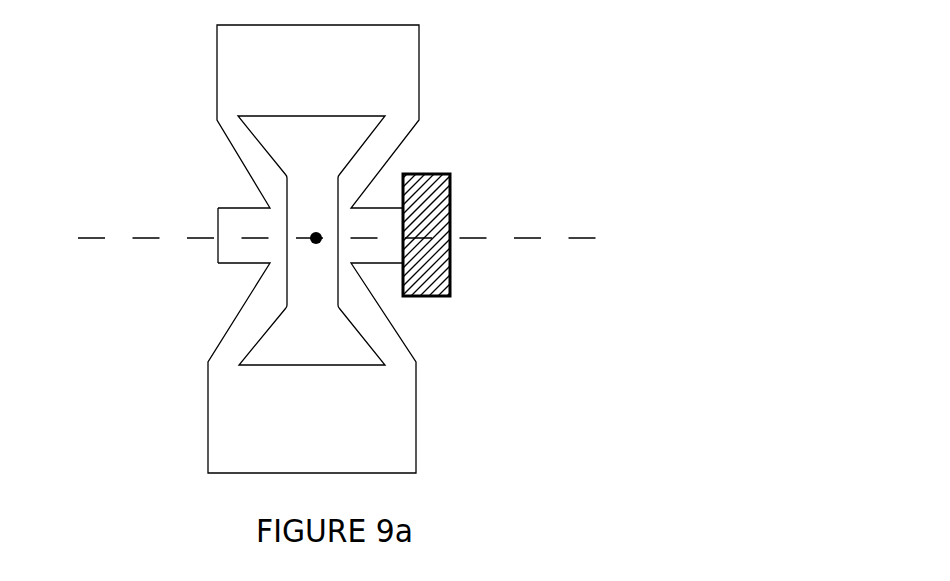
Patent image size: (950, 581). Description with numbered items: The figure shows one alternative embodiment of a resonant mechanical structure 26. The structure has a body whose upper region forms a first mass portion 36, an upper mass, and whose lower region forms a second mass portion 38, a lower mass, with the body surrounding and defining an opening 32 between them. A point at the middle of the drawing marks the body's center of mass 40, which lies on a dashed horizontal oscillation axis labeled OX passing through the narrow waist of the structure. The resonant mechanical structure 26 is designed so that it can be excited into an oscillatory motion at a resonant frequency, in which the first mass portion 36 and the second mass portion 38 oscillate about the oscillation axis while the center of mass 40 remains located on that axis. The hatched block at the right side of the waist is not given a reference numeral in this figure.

The resonant mechanical structure 26 is at (96, 101).
The opening 32 is at (242, 167).
The first mass portion 36 is at (356, 79).
The second mass portion 38 is at (283, 410).
The center of mass 40 is at (311, 245).